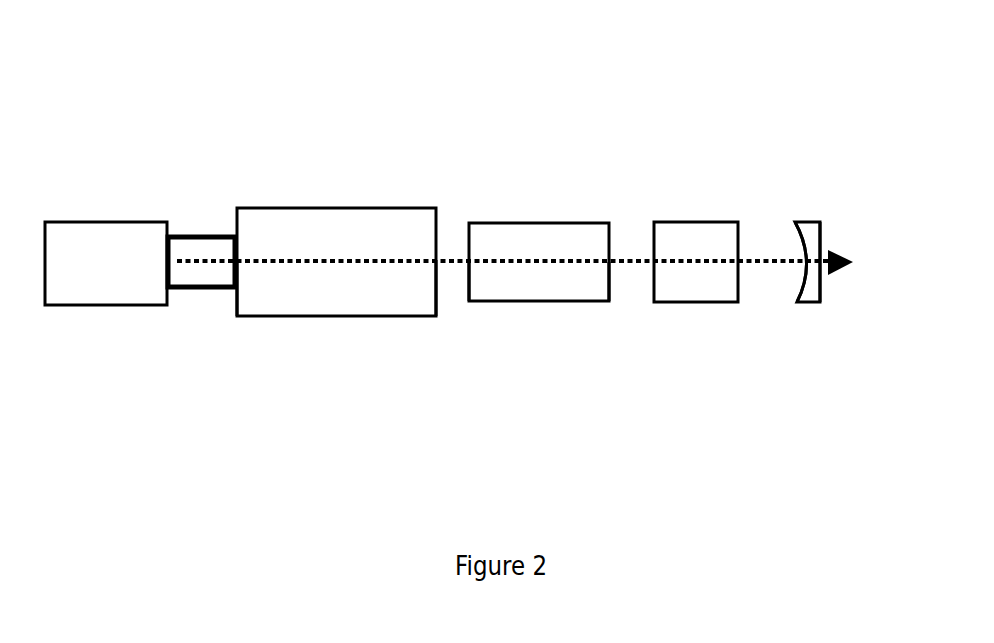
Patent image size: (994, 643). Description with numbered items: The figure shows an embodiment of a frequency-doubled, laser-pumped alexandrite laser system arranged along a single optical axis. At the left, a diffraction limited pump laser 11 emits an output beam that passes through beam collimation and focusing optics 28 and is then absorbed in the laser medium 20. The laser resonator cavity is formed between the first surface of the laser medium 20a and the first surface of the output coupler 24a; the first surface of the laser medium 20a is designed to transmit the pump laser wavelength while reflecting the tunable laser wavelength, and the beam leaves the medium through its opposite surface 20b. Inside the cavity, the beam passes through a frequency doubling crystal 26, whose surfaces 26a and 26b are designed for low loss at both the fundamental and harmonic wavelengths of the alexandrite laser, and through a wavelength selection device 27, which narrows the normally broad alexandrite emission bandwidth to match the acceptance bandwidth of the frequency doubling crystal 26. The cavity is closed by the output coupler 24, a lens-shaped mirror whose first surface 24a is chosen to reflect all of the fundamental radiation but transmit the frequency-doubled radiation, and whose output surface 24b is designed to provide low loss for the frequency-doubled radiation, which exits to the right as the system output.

The diffraction limited pump laser 11 is at (107, 205).
The beam collimation and focusing optics 28 is at (205, 220).
The laser medium 20 is at (342, 191).
The first surface of the laser medium 20a is at (225, 325).
The second surface of the laser medium 20b is at (418, 304).
The frequency doubling crystal 26 is at (538, 206).
The first surface of the frequency doubling crystal 26a is at (478, 295).
The second surface of the frequency doubling crystal 26b is at (618, 310).
The wavelength selection device 27 is at (690, 206).
The output coupler 24 is at (808, 205).
The first surface of the output coupler 24a is at (794, 293).
The output surface of the output coupler 24b is at (834, 294).